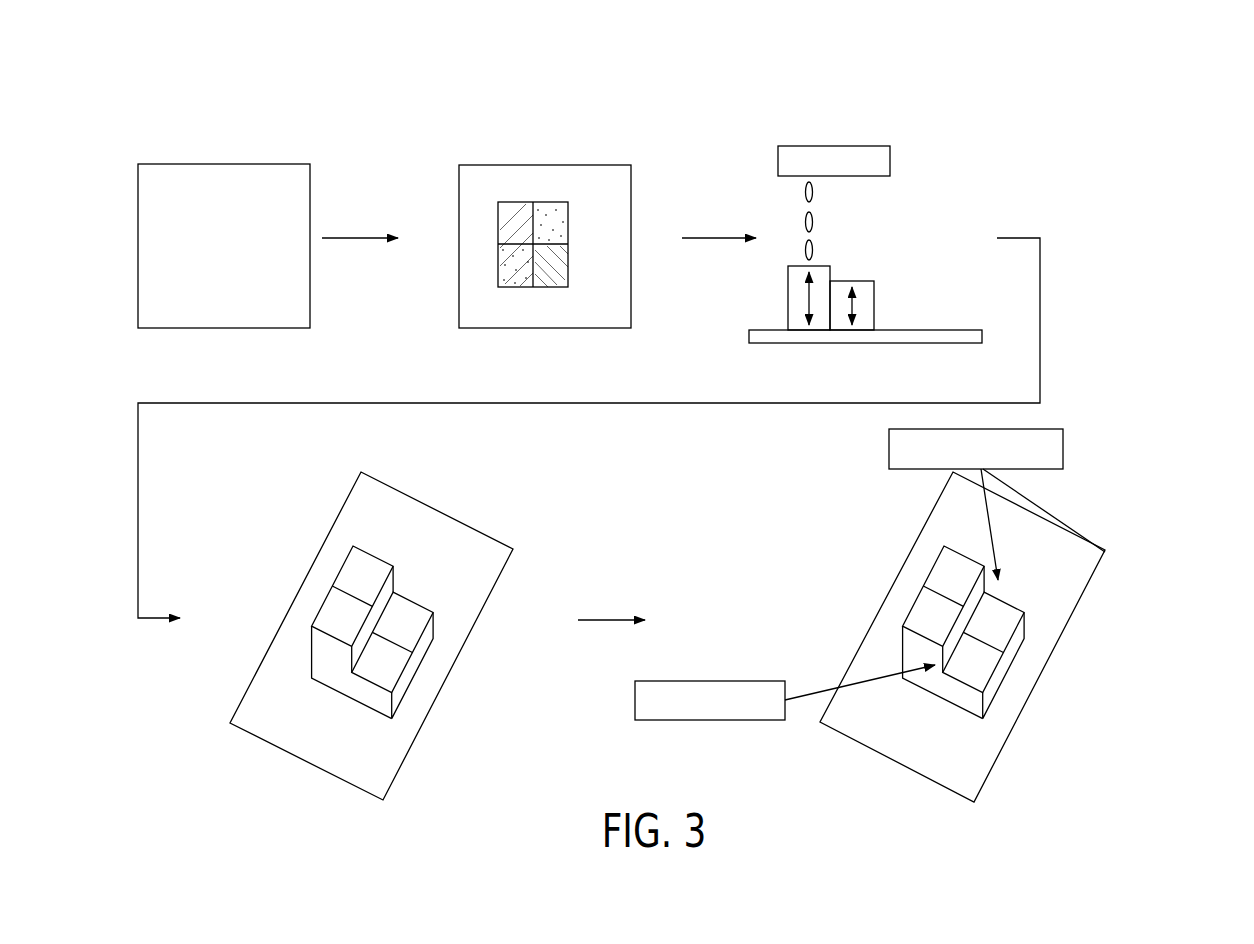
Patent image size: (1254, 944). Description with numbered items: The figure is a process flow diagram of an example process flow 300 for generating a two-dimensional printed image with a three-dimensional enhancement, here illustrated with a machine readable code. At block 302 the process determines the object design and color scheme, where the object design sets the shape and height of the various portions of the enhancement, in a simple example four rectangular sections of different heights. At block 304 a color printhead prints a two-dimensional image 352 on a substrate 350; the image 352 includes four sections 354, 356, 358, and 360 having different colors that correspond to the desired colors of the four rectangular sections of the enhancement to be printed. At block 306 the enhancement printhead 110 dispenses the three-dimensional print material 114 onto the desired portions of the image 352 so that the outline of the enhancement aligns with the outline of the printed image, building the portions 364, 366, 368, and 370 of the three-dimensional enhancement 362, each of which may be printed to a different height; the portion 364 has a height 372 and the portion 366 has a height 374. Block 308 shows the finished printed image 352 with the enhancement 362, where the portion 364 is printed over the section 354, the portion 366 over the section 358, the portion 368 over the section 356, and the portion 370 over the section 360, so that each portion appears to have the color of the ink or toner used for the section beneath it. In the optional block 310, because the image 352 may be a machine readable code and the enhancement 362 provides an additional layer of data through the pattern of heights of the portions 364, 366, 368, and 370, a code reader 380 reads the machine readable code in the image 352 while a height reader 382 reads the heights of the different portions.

The process flow 300 is at (1047, 157).
The object design and color scheme block 302 is at (233, 136).
The 2D image printing block 304 is at (545, 137).
The 3D enhancement printing block 306 is at (838, 130).
The finished image block 308 is at (310, 505).
The optional reading block 310 is at (1133, 500).
The enhancement printhead 110 is at (891, 155).
The 3D print material 114 is at (818, 210).
The substrate 350 is at (600, 165).
The 2D image 352 is at (520, 190).
The first section 354 is at (503, 212).
The second section 356 is at (562, 213).
The third section 358 is at (505, 265).
The fourth section 360 is at (562, 268).
The 3D enhancement 362 is at (888, 268).
The first portion 364 is at (787, 300).
The second portion 366 is at (875, 302).
The third portion 368 is at (410, 566).
The fourth portion 370 is at (395, 705).
The height of first portion 372 is at (811, 328).
The height of second portion 374 is at (853, 328).
The code reader 380 is at (758, 681).
The height reader 382 is at (914, 470).